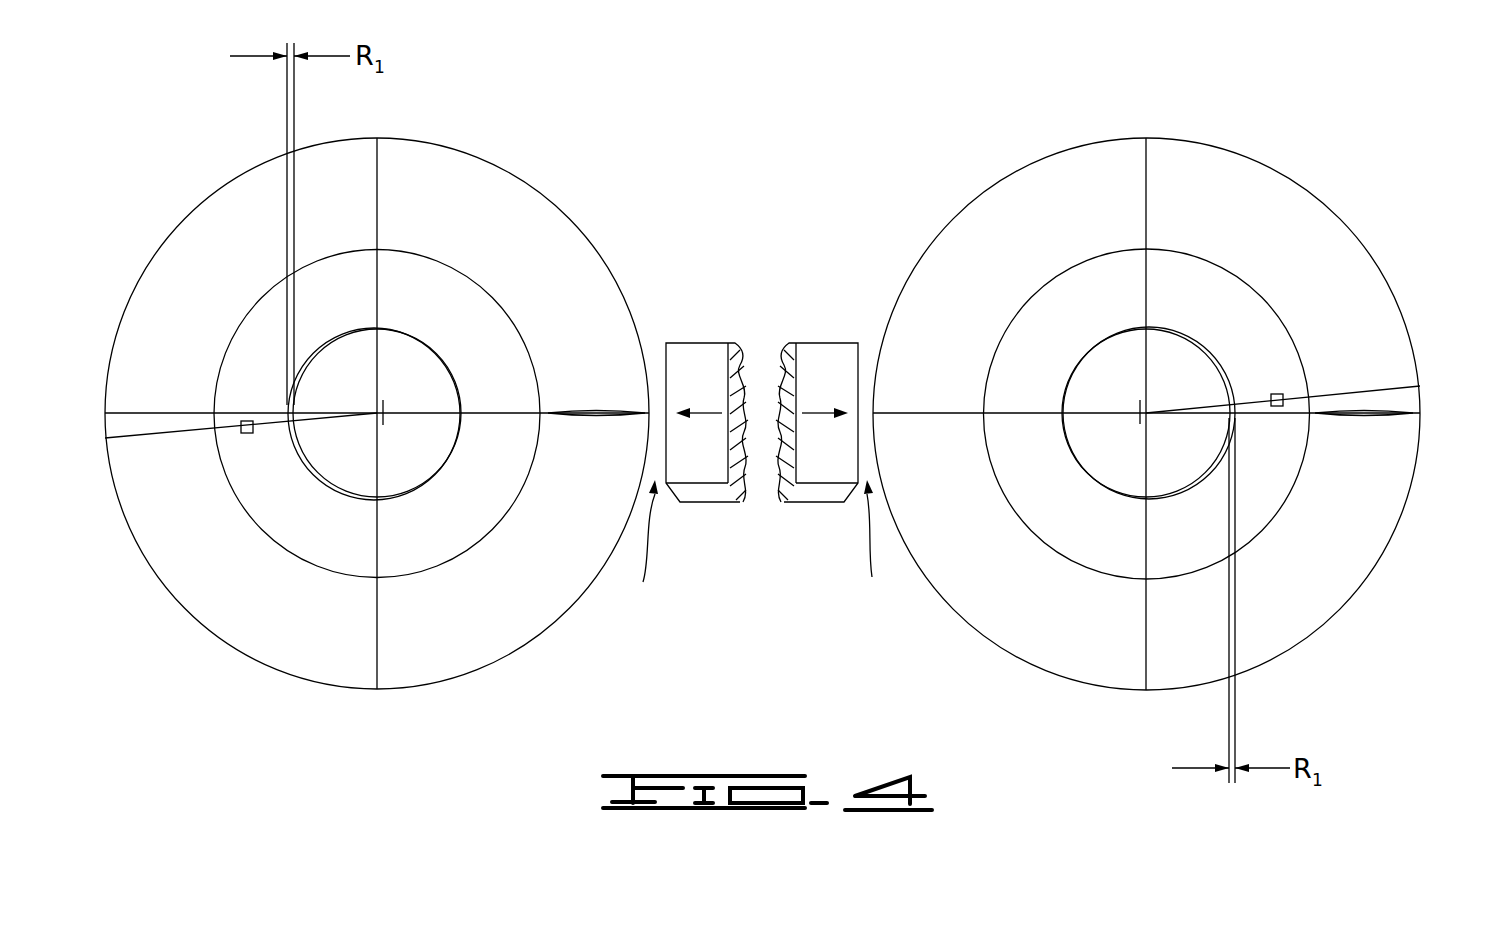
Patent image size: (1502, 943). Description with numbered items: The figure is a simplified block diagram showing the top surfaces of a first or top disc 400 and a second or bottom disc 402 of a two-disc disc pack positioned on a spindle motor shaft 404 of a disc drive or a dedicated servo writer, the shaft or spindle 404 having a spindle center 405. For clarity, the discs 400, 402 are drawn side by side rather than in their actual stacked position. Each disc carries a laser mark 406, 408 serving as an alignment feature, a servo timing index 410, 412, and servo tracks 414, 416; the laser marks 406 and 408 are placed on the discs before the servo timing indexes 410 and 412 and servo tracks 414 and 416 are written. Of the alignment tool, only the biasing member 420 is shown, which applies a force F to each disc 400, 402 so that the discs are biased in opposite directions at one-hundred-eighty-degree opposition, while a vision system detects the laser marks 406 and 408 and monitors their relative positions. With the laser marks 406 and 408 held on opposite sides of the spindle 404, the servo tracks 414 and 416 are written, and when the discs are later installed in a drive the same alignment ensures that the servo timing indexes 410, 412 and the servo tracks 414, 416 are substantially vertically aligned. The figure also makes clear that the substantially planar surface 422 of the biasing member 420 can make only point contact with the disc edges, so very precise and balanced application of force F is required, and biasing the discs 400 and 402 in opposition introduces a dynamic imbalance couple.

The top disc 400 is at (482, 155).
The bottom disc 402 is at (1251, 155).
The spindle motor shaft 404 is at (337, 455).
The spindle center 405 is at (395, 432).
The laser mark 406 is at (245, 421).
The laser mark 408 is at (1277, 394).
The servo timing index 410 is at (587, 410).
The servo timing index 412 is at (1365, 410).
The servo tracks 414 is at (477, 283).
The servo tracks 416 is at (1072, 263).
The biasing member 420 is at (690, 343).
The substantially planar surface 422 is at (759, 549).